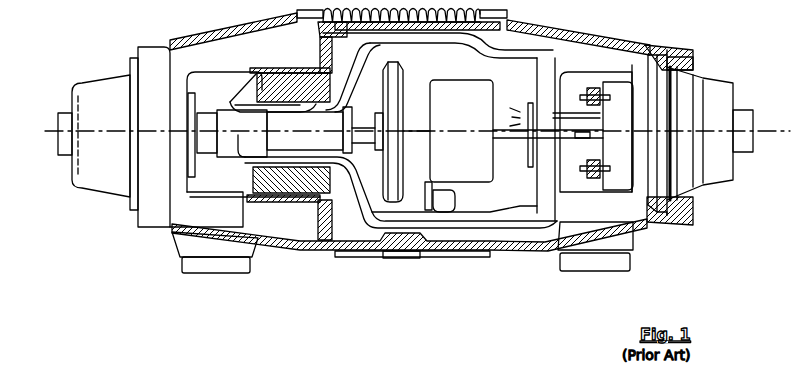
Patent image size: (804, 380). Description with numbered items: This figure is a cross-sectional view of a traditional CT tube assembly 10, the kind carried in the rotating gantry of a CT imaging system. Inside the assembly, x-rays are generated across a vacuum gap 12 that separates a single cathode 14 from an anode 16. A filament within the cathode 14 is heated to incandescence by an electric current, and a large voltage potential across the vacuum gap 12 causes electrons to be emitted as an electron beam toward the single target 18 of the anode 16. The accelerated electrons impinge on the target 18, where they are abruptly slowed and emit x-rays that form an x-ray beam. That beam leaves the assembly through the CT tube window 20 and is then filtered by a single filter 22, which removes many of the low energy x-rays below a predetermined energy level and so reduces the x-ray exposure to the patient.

The CT tube assembly 10 is at (568, 32).
The vacuum gap 12 is at (407, 274).
The cathode 14 is at (447, 210).
The anode 16 is at (398, 65).
The target 18 is at (398, 165).
The CT tube window 20 is at (396, 258).
The filter 22 is at (422, 258).